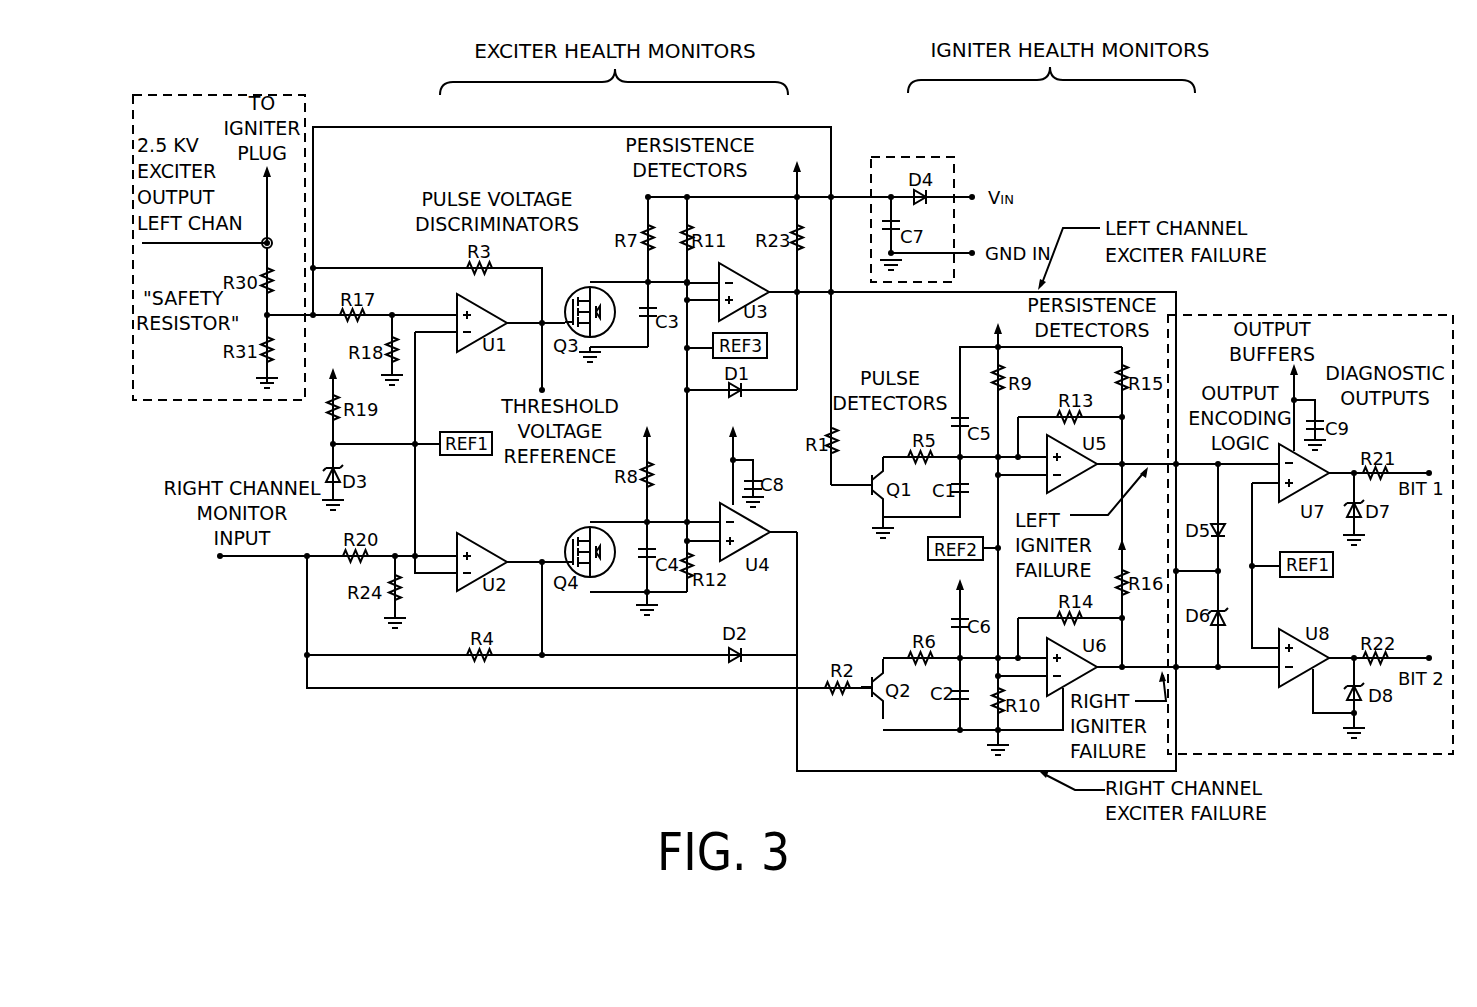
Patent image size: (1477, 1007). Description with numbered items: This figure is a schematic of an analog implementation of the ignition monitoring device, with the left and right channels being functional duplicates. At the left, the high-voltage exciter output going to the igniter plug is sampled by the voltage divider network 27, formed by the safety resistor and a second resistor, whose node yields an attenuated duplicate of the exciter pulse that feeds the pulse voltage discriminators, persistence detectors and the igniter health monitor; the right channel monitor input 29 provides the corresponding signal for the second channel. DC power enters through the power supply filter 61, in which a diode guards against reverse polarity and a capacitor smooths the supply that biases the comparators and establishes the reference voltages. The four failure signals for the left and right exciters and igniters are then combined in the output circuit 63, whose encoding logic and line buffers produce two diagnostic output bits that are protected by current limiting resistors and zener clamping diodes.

The voltage divider network 27 is at (220, 403).
The right channel monitor input 29 is at (220, 559).
The power supply filter 61 is at (913, 155).
The output circuit 63 is at (1323, 315).